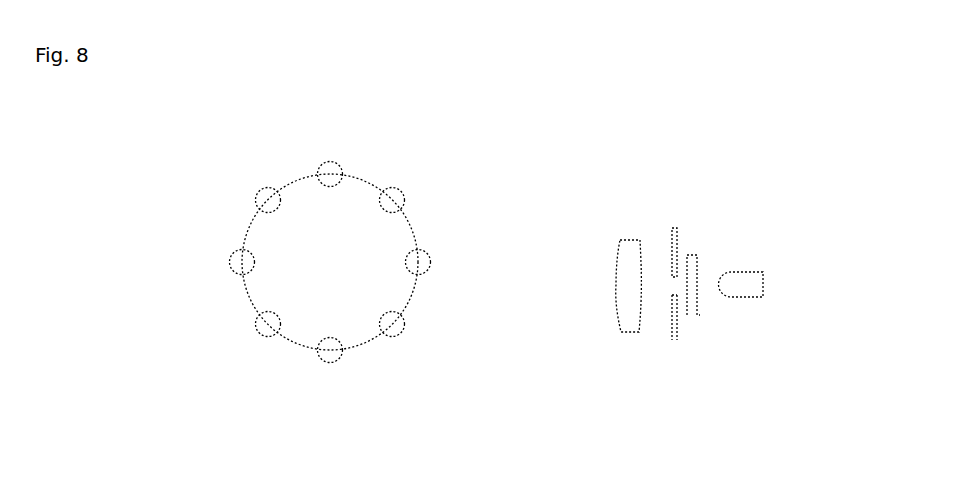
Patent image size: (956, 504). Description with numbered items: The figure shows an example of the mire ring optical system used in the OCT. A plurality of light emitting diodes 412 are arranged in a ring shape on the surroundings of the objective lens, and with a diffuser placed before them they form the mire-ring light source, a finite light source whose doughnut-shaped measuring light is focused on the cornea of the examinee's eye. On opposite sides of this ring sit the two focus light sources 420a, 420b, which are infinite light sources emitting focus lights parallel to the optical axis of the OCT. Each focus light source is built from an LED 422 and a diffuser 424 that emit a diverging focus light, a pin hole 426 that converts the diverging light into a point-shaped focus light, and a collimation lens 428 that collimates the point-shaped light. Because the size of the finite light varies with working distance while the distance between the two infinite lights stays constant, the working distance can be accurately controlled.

The light emitting diodes 412 is at (335, 162).
The focus light source 420a is at (430, 265).
The focus light source 420b is at (232, 273).
The focus light source LED 422 is at (758, 297).
The diffuser 424 is at (700, 315).
The pin hole 426 is at (674, 340).
The collimation lens 428 is at (628, 334).